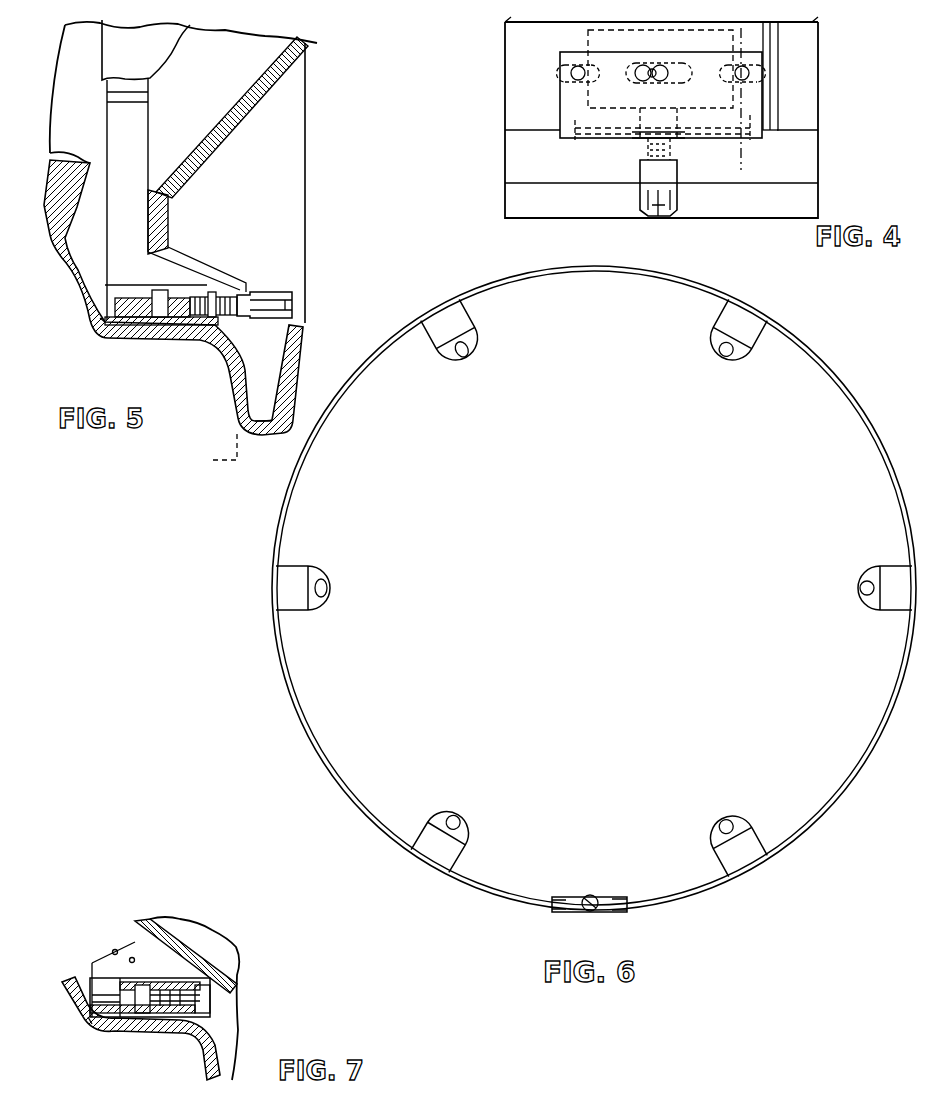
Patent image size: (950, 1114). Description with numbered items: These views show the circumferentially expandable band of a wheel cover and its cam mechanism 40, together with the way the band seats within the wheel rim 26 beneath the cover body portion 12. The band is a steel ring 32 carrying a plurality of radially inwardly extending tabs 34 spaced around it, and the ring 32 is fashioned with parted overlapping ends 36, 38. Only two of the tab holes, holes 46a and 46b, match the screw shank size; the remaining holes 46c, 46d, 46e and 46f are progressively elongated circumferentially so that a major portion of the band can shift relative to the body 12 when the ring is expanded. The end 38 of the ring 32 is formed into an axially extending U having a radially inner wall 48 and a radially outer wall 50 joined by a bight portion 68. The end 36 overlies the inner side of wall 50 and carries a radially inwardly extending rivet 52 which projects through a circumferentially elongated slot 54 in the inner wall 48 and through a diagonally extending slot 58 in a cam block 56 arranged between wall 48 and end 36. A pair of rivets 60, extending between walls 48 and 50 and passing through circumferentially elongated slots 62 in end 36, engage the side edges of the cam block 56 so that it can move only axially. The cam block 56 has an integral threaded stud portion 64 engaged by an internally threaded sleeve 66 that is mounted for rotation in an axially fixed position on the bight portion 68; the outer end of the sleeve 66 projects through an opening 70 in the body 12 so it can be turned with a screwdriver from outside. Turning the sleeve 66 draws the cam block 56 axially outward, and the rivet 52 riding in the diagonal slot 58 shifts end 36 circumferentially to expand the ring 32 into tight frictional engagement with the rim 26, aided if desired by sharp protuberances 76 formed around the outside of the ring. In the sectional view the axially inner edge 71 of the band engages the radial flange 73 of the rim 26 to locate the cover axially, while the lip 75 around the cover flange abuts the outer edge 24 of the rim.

In FIG. 4, the body portion 12 is at (661, 117).
In FIG. 5, the body portion 12 is at (290, 152).
In FIG. 7, the body portion 12 is at (165, 998).
In FIG. 5, the outer edge 24 is at (258, 430).
In FIG. 5, the wheel rim 26 is at (222, 392).
In FIG. 7, the wheel rim 26 is at (141, 1028).
In FIG. 5, the steel ring 32 is at (128, 146).
In FIG. 6, the steel ring 32 is at (286, 706).
In FIG. 7, the steel ring 32 is at (108, 968).
In FIG. 6, the tabs 34 is at (300, 562).
In FIG. 4, the overlapping end 36 is at (778, 62).
In FIG. 5, the overlapping end 36 is at (118, 318).
In FIG. 6, the overlapping end 36 is at (632, 906).
In FIG. 4, the overlapping end 38 is at (580, 128).
In FIG. 6, the overlapping end 38 is at (612, 909).
In FIG. 4, the cam mechanism 40 is at (570, 50).
In FIG. 6, the hole 46a is at (728, 824).
In FIG. 6, the hole 46b is at (858, 592).
In FIG. 6, the elongated hole 46c is at (733, 352).
In FIG. 6, the elongated hole 46d is at (466, 352).
In FIG. 6, the elongated hole 46e is at (328, 584).
In FIG. 6, the elongated hole 46f is at (458, 826).
In FIG. 5, the inner wall 48 is at (150, 298).
In FIG. 7, the inner wall 48 is at (182, 982).
In FIG. 5, the outer wall 50 is at (130, 326).
In FIG. 7, the outer wall 50 is at (172, 1018).
In FIG. 4, the rivet 52 is at (647, 81).
In FIG. 5, the rivet 52 is at (164, 290).
In FIG. 7, the rivet 52 is at (142, 999).
In FIG. 4, the circumferentially elongated slot 54 is at (672, 78).
In FIG. 4, the cam block 56 is at (643, 66).
In FIG. 5, the cam block 56 is at (200, 297).
In FIG. 7, the cam block 56 is at (175, 998).
In FIG. 4, the diagonally-extending slot 58 is at (662, 66).
In FIG. 5, the diagonally-extending slot 58 is at (212, 304).
In FIG. 4, the rivets 60 is at (582, 80).
In FIG. 7, the rivets 60 is at (118, 990).
In FIG. 4, the circumferentially elongated slots 62 is at (565, 83).
In FIG. 4, the threaded stud portion 64 is at (694, 136).
In FIG. 4, the internally threaded sleeve 66 is at (668, 210).
In FIG. 5, the internally threaded sleeve 66 is at (294, 296).
In FIG. 6, the internally threaded sleeve 66 is at (590, 895).
In FIG. 4, the bight portion 68 is at (636, 140).
In FIG. 6, the bight portion 68 is at (563, 907).
In FIG. 7, the bight portion 68 is at (212, 1006).
In FIG. 5, the opening 70 is at (236, 282).
In FIG. 5, the axially inner edge 71 is at (112, 122).
In FIG. 7, the axially inner edge 71 is at (86, 1014).
In FIG. 5, the radial flange 73 is at (104, 322).
In FIG. 7, the radial flange 73 is at (90, 1026).
In FIG. 5, the lip 75 is at (272, 435).
In FIG. 7, the sharp protuberances 76 is at (130, 957).